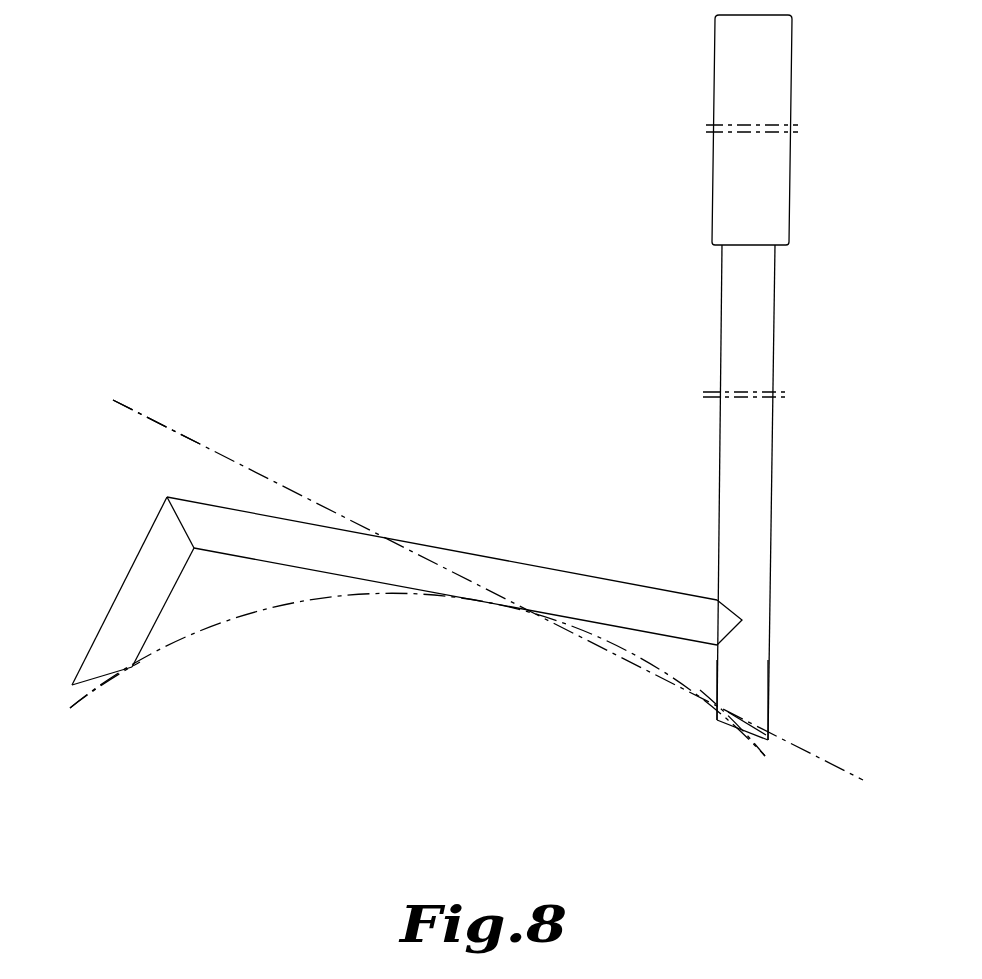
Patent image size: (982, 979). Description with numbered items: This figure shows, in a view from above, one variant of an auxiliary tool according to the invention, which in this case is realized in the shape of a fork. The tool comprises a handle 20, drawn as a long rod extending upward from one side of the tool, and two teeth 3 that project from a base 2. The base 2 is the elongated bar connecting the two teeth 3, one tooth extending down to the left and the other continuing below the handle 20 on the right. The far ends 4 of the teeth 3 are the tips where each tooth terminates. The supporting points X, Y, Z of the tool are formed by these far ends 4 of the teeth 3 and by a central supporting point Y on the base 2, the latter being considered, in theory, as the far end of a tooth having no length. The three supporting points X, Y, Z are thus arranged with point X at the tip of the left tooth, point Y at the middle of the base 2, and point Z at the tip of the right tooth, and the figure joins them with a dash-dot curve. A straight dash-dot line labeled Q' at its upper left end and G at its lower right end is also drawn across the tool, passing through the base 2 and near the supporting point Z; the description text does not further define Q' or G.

The base 2 is at (368, 548).
The teeth 3 is at (128, 587).
The far ends 4 is at (95, 663).
The handle 20 is at (765, 302).
The straight line G is at (490, 590).
The point Q' is at (156, 412).
The supporting point X is at (102, 677).
The central supporting point Y is at (450, 597).
The supporting point Z is at (738, 727).